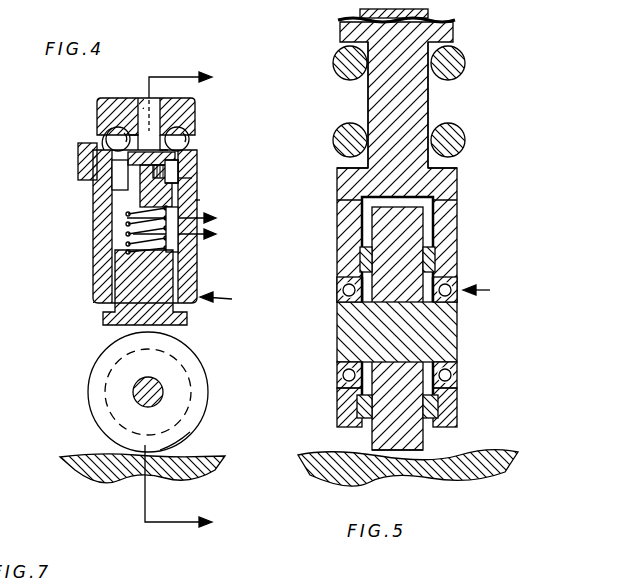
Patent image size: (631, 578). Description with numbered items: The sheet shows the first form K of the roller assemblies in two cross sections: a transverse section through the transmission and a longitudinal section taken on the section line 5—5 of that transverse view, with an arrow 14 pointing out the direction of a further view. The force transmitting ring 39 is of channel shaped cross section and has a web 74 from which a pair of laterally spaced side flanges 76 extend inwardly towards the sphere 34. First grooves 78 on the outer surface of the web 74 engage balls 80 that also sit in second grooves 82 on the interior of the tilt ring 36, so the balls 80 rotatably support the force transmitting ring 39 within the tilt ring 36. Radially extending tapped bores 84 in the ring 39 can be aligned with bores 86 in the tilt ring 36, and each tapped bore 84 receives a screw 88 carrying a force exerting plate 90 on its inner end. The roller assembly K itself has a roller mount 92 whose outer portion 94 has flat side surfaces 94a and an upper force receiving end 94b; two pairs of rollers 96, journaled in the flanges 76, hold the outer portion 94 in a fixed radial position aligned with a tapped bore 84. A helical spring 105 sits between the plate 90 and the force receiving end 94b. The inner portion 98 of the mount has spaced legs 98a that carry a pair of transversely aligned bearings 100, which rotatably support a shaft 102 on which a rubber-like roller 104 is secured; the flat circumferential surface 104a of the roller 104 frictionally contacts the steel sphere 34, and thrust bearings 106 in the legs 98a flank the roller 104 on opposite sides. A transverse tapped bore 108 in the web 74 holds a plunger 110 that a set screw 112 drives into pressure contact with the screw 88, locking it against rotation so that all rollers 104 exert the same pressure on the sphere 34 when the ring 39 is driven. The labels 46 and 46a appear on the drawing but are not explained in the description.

In FIG. 4, the view direction arrow 14 is at (195, 149).
In FIG. 4, the section line for FIG. 5 is at (189, 383).
In FIG. 4, the sphere 34 is at (90, 477).
In FIG. 5, the sphere 34 is at (312, 470).
In FIG. 4, the tilt ring 36 is at (197, 109).
In FIG. 4, the force transmitting ring 39 is at (199, 204).
In FIG. 4, the housing body 46 is at (95, 165).
In FIG. 4, the housing bore 46a is at (115, 185).
In FIG. 4, the web 74 is at (197, 147).
In FIG. 4, the side flanges 76 is at (93, 262).
In FIG. 4, the first grooves 78 is at (97, 156).
In FIG. 4, the balls 80 is at (108, 137).
In FIG. 4, the second grooves 82 is at (117, 127).
In FIG. 4, the tapped bores 84 is at (140, 200).
In FIG. 4, the bores 86 is at (146, 100).
In FIG. 4, the screw 88 is at (128, 226).
In FIG. 4, the force exerting plate 90 is at (190, 225).
In FIG. 5, the roller mount 92 is at (457, 176).
In FIG. 5, the outer portion 94 is at (432, 93).
In FIG. 5, the side surfaces 94a is at (368, 93).
In FIG. 5, the force receiving end 94b is at (345, 18).
In FIG. 5, the rollers 96 is at (338, 58).
In FIG. 5, the inner portion 98 is at (458, 186).
In FIG. 5, the legs 98a is at (340, 240).
In FIG. 5, the bearings 100 is at (455, 380).
In FIG. 4, the shaft 102 is at (148, 378).
In FIG. 5, the shaft 102 is at (445, 325).
In FIG. 4, the roller 104 is at (207, 398).
In FIG. 5, the roller 104 is at (415, 215).
In FIG. 4, the flat circumferential surface 104a is at (185, 447).
In FIG. 5, the flat circumferential surface 104a is at (372, 452).
In FIG. 4, the helical spring 105 is at (120, 270).
In FIG. 5, the thrust bearings 106 is at (432, 252).
In FIG. 4, the transverse tapped bore 108 is at (200, 172).
In FIG. 4, the plunger 110 is at (180, 168).
In FIG. 4, the set screw 112 is at (185, 178).
In FIG. 4, the first form of roller assembly K is at (224, 304).
In FIG. 5, the first form of roller assembly K is at (485, 290).